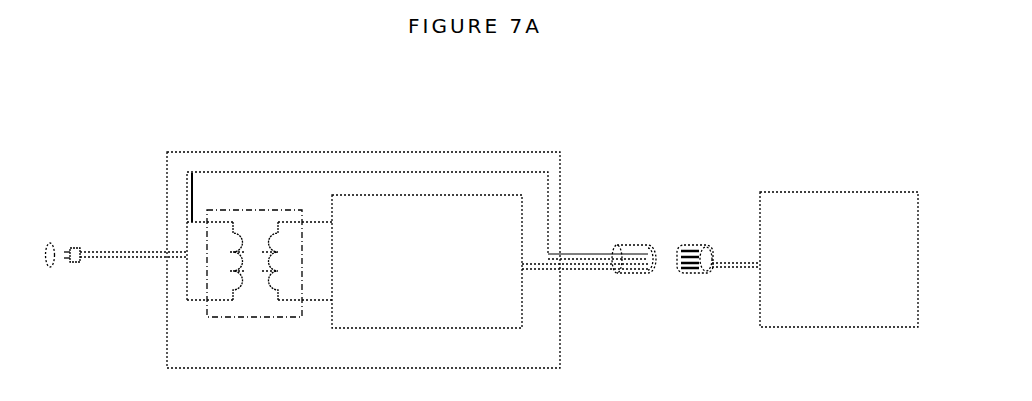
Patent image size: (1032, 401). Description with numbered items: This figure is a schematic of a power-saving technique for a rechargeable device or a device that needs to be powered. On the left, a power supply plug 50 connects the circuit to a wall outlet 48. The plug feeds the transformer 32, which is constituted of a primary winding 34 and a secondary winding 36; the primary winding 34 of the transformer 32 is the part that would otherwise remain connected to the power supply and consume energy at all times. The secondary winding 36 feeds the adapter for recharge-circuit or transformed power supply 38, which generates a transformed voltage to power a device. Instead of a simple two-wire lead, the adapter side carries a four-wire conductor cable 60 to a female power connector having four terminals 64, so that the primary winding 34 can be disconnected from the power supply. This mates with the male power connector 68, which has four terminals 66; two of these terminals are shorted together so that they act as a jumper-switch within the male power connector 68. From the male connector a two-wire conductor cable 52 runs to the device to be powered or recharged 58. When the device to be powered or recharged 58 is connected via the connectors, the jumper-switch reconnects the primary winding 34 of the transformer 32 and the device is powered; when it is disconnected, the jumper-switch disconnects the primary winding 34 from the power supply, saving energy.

The transformer 32 is at (251, 284).
The primary winding 34 is at (228, 257).
The secondary winding 36 is at (280, 272).
The adapter for recharge-circuit or transformed power supply 38 is at (442, 305).
The wall outlet 48 is at (52, 243).
The power supply plug 50 is at (125, 270).
The 2-wires conductor cable 52 is at (733, 261).
The device to be powered or recharged 58 is at (843, 312).
The 4-wires conductor cable 60 is at (583, 253).
The four terminals of female power connector 64 is at (640, 274).
The four terminals of male power connector 66 is at (703, 248).
The jumper-switch within the male power connector 68 is at (703, 250).